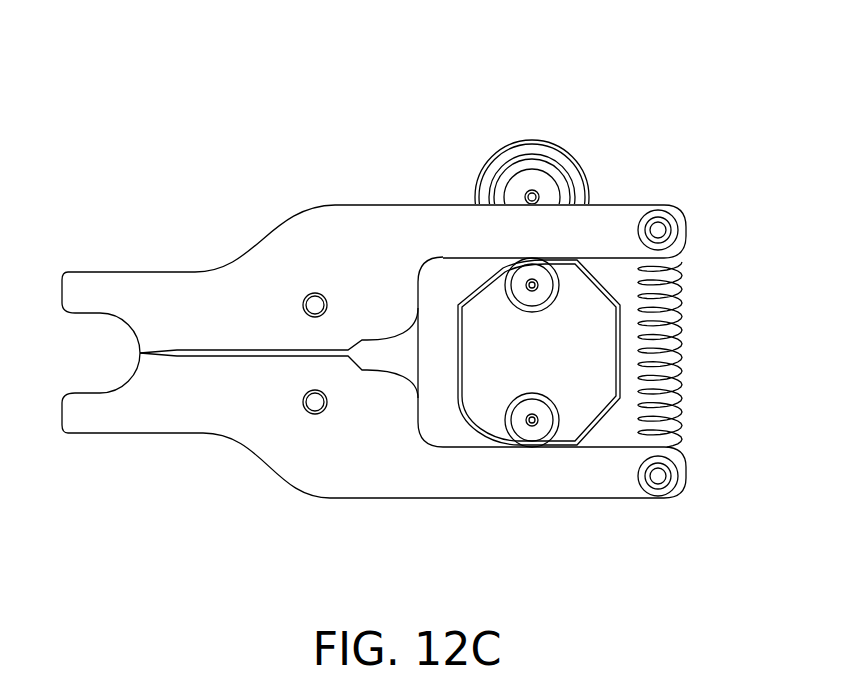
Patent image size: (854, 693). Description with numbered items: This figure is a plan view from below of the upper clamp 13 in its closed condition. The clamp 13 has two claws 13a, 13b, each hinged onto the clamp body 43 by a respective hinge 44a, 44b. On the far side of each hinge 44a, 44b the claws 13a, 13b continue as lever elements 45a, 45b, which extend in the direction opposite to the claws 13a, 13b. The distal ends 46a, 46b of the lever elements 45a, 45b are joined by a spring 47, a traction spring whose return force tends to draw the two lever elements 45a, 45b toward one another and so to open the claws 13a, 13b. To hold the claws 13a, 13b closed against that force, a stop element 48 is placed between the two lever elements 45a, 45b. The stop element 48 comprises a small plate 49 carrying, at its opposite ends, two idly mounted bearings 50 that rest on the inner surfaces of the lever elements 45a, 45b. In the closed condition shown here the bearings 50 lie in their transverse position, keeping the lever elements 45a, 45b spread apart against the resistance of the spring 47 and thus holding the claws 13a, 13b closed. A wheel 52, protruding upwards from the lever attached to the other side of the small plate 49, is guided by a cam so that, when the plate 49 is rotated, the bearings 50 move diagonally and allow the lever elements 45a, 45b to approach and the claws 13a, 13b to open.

The upper clamp 13 is at (452, 140).
The claw 13a is at (100, 285).
The claw 13b is at (112, 417).
The clamp body 43 is at (368, 370).
The hinge 44a is at (313, 293).
The hinge 44b is at (317, 414).
The lever element 45a is at (603, 233).
The lever element 45b is at (537, 482).
The distal end 46a is at (688, 236).
The distal end 46b is at (688, 477).
The spring 47 is at (682, 353).
The stop element 48 is at (487, 320).
The small plate 49 is at (577, 378).
The bearing 50 is at (537, 285).
The wheel 52 is at (523, 150).